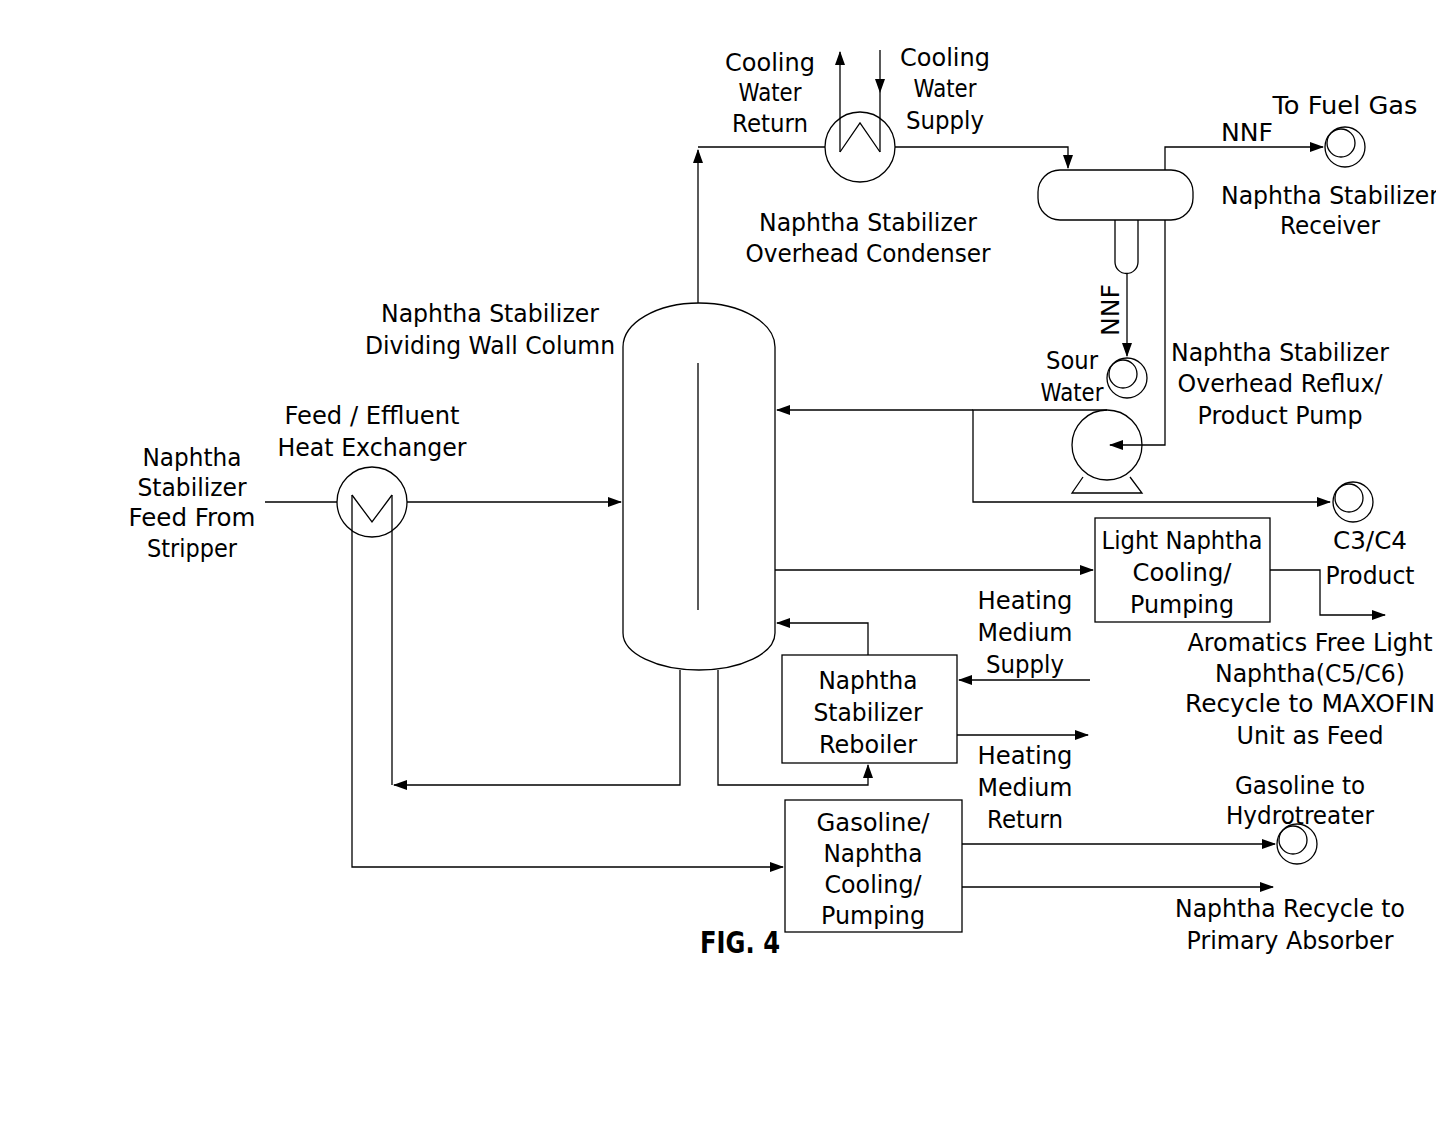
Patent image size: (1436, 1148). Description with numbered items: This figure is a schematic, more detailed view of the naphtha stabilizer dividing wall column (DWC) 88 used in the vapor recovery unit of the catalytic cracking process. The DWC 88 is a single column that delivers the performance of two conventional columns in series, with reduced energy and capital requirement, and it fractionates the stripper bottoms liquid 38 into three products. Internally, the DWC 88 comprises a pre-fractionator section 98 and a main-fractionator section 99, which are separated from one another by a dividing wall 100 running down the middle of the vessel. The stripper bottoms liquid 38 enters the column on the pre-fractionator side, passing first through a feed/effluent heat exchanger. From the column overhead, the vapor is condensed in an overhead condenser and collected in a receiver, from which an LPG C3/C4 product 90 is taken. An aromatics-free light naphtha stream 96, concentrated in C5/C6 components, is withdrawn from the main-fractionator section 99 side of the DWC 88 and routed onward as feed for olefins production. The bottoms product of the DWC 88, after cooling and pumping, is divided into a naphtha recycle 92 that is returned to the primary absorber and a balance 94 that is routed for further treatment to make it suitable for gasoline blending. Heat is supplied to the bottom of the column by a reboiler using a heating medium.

The stripper bottoms liquid 38 is at (325, 500).
The dividing wall column 88 is at (631, 467).
The LPG C3/C4 product 90 is at (700, 203).
The naphtha recycle 92 is at (1077, 889).
The balance 94 is at (1197, 842).
The aromatics-free light naphtha stream 96 is at (1292, 565).
The pre-fractionator section 98 is at (645, 375).
The main-fractionator section 99 is at (722, 375).
The dividing wall 100 is at (698, 587).